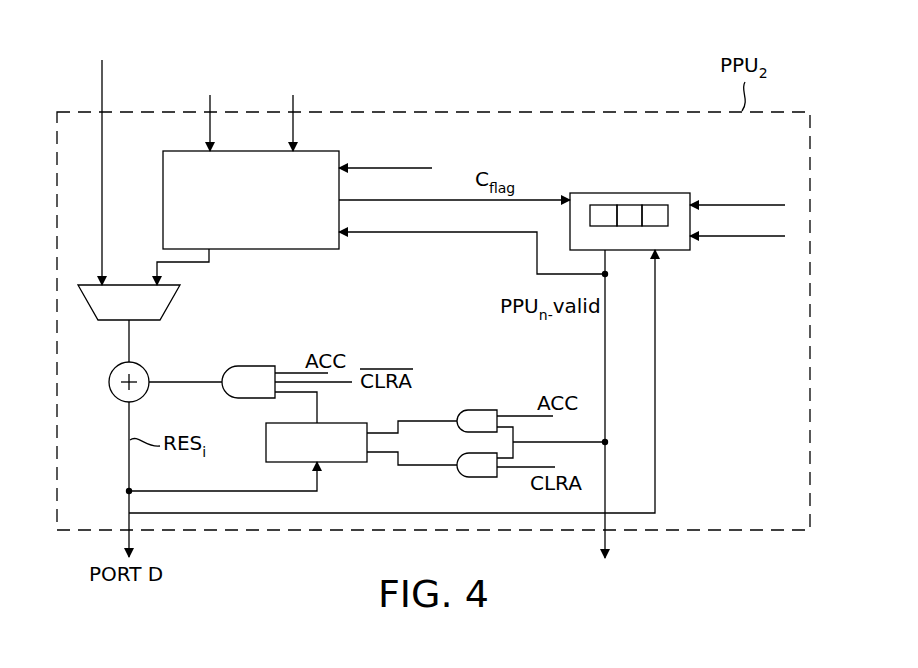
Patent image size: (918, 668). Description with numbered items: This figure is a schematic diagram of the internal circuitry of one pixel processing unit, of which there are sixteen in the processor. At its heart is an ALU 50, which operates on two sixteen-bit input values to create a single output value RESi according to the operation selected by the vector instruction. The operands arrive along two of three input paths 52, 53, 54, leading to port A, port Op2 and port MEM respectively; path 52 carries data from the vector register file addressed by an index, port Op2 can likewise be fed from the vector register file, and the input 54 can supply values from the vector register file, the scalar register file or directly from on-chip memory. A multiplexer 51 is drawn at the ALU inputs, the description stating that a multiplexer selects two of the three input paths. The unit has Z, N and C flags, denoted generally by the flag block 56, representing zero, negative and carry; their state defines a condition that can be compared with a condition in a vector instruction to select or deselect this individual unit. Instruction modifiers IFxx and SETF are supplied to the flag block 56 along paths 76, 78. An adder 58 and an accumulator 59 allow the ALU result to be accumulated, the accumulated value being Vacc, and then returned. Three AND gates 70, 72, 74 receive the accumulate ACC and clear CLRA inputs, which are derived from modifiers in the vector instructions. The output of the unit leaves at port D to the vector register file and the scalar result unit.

The ALU 50 is at (305, 249).
The multiplexer 51 is at (129, 284).
The input path 52 is at (211, 124).
The input path 53 is at (294, 124).
The input path 54 is at (103, 90).
The flag block 56 is at (628, 193).
The adder 58 is at (146, 370).
The accumulator 59 is at (357, 462).
The AND gate 70 is at (250, 366).
The AND gate 72 is at (472, 410).
The AND gate 74 is at (462, 479).
The path 76 is at (712, 205).
The path 78 is at (712, 236).